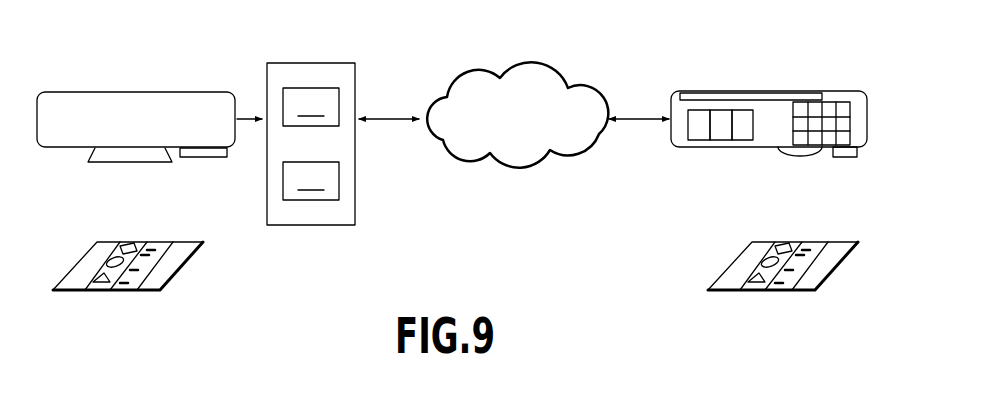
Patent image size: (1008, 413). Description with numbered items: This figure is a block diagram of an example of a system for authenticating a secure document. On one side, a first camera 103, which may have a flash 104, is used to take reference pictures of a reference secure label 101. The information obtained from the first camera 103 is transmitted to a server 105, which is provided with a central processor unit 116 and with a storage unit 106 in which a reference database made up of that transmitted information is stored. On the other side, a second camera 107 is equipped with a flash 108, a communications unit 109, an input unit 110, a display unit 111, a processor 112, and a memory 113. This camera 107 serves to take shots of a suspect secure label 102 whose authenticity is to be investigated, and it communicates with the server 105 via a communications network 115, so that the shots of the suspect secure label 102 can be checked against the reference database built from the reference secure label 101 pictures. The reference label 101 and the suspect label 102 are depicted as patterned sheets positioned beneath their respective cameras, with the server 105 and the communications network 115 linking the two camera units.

The reference secure label 101 is at (119, 298).
The suspect secure label 102 is at (776, 298).
The first camera 103 is at (125, 86).
The flash 104 is at (210, 153).
The server 105 is at (311, 175).
The storage unit 106 is at (311, 181).
The camera 107 is at (768, 126).
The flash 108 is at (845, 158).
The communications unit 109 is at (698, 135).
The input unit 110 is at (830, 110).
The display unit 111 is at (710, 95).
The processor 112 is at (722, 134).
The memory 113 is at (742, 134).
The communications network 115 is at (498, 147).
The central processor unit 116 is at (311, 107).